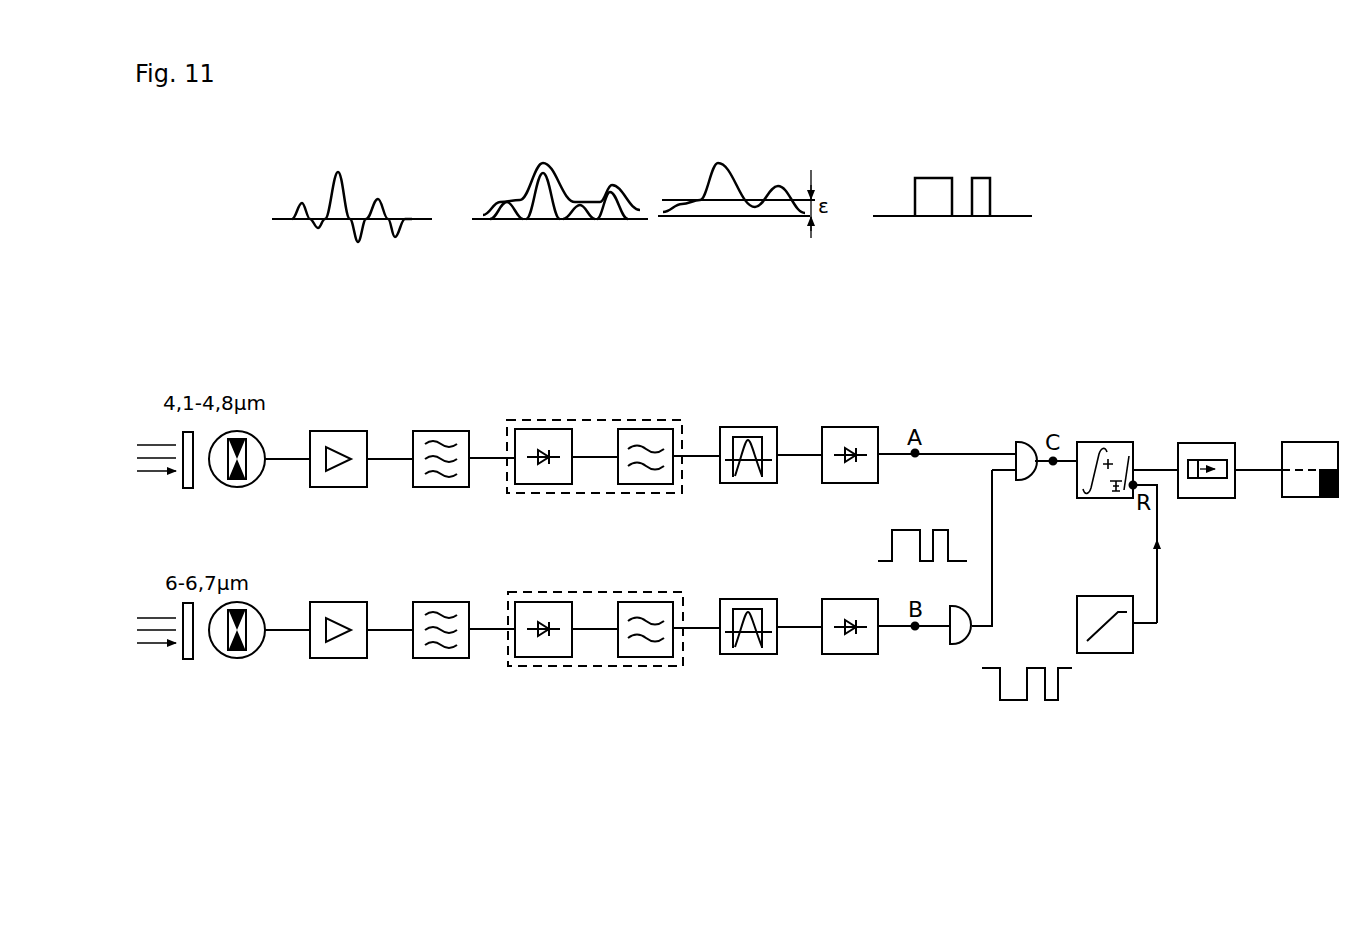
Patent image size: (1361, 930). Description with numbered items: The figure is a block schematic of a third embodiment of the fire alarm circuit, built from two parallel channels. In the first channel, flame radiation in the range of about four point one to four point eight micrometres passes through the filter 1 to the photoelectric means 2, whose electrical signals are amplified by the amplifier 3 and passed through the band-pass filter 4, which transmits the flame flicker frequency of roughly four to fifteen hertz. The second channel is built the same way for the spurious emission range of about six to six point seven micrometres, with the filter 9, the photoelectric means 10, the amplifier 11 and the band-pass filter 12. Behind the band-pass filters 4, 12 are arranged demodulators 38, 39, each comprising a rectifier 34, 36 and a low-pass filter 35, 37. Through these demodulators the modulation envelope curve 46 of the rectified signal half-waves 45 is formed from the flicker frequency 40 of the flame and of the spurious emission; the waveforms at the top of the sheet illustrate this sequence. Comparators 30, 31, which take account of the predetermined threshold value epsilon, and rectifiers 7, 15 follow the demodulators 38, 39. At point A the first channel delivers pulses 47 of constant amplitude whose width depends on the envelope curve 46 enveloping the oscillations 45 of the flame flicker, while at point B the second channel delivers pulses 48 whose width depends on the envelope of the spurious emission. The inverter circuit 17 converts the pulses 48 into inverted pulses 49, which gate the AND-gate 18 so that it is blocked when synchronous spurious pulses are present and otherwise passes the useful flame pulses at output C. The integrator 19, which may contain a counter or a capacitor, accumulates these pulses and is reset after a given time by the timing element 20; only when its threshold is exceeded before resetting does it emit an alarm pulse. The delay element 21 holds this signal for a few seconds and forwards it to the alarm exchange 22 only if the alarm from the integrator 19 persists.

The filter 1 is at (189, 475).
The photoelectric means 2 is at (237, 475).
The amplifier 3 is at (338, 475).
The band-pass filter 4 is at (441, 475).
The rectifier 7 is at (850, 471).
The filter 9 is at (188, 647).
The photoelectric means 10 is at (237, 647).
The amplifier 11 is at (338, 647).
The band-pass filter 12 is at (441, 647).
The rectifier 15 is at (850, 644).
The inverter circuit 17 is at (959, 639).
The AND-gate 18 is at (1014, 476).
The integrator 19 is at (1105, 484).
The timing element 20 is at (1105, 613).
The delay element 21 is at (1206, 485).
The alarm exchange 22 is at (1310, 484).
The comparator 30 is at (748, 471).
The comparator 31 is at (748, 644).
The rectifier 34 is at (543, 475).
The low-pass filter 35 is at (645, 475).
The rectifier 36 is at (543, 649).
The low-pass filter 37 is at (645, 649).
The demodulator 38 is at (594, 442).
The demodulator 39 is at (595, 616).
The flicker frequency 40 is at (350, 190).
The rectified signal half-waves 45 is at (532, 203).
The modulation envelope curve 46 is at (547, 170).
The pulses 47 is at (933, 174).
The pulses 48 is at (922, 529).
The inverted pulses 49 is at (1027, 701).